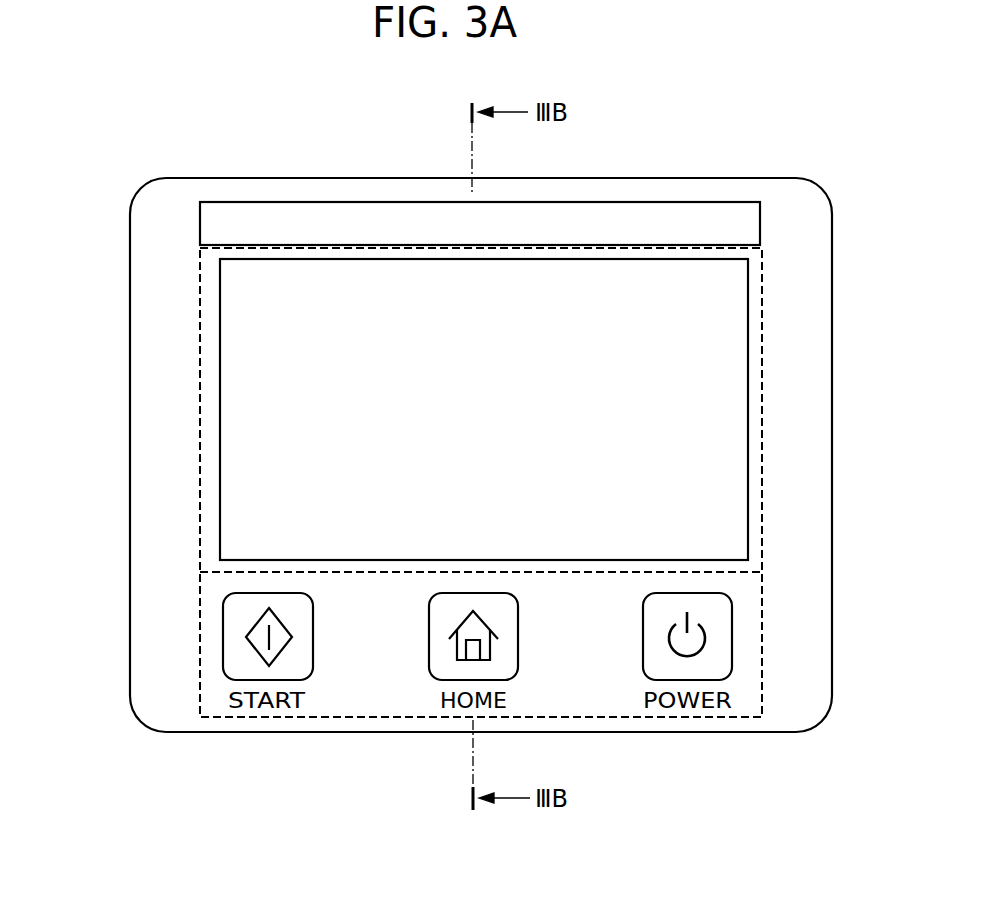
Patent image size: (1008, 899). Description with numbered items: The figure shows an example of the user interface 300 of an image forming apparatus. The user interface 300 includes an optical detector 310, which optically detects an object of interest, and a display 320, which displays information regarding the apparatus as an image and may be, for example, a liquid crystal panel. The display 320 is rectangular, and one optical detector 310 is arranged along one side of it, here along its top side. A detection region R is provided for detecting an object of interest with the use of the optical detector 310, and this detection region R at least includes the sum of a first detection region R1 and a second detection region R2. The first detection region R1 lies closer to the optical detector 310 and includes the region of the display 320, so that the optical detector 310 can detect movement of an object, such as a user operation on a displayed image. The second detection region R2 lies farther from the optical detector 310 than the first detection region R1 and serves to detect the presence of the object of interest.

The user interface 300 is at (778, 178).
The optical detector 310 is at (665, 202).
The display 320 is at (748, 431).
The detection region R is at (46, 385).
The first detection region R1 is at (200, 416).
The second detection region R2 is at (200, 632).